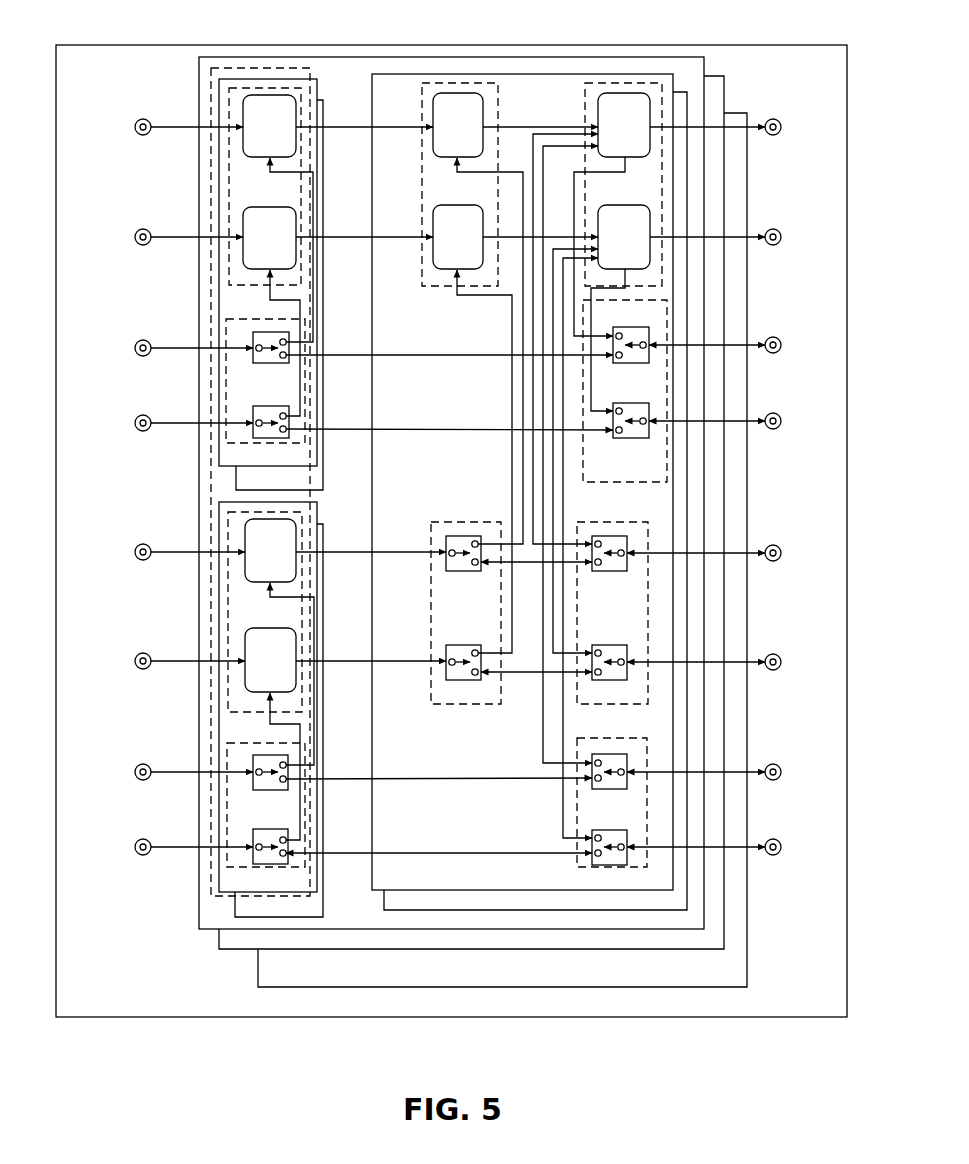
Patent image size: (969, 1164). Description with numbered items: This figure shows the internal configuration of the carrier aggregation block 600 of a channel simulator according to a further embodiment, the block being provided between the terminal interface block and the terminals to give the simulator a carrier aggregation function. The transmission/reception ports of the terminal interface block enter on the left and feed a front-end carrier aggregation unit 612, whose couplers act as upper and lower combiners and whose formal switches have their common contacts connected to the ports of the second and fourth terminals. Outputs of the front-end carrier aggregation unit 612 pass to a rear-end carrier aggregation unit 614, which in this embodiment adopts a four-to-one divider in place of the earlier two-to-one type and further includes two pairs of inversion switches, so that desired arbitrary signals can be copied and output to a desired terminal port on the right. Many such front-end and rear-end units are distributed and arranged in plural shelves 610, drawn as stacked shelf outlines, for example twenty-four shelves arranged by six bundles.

The carrier aggregation block 600 is at (536, 1054).
The shelves 610 is at (195, 923).
The front-end carrier aggregation unit 612 is at (267, 79).
The rear-end carrier aggregation unit 614 is at (533, 74).